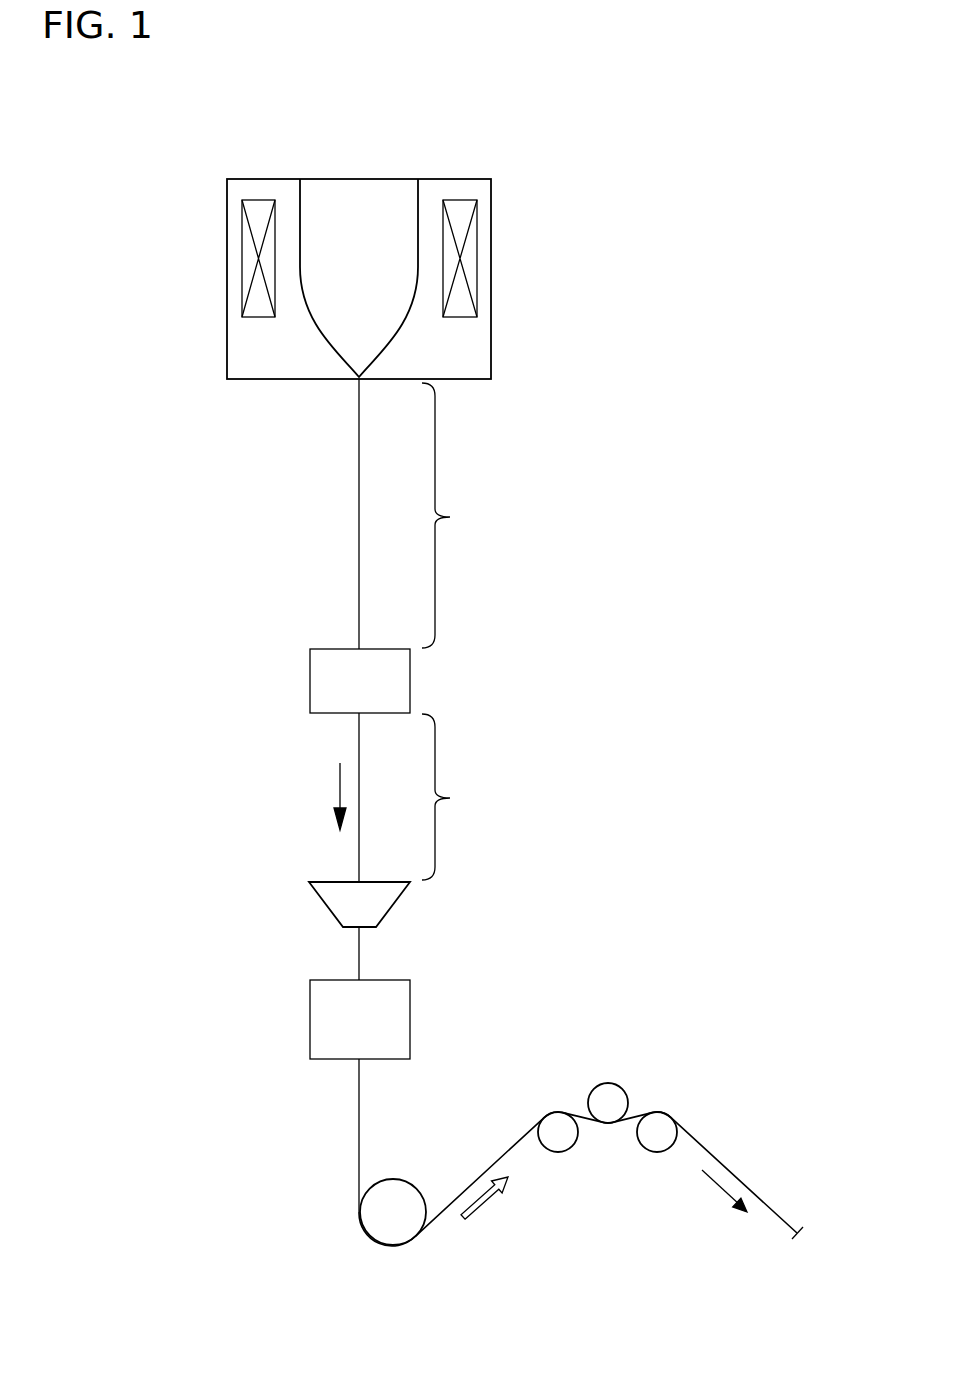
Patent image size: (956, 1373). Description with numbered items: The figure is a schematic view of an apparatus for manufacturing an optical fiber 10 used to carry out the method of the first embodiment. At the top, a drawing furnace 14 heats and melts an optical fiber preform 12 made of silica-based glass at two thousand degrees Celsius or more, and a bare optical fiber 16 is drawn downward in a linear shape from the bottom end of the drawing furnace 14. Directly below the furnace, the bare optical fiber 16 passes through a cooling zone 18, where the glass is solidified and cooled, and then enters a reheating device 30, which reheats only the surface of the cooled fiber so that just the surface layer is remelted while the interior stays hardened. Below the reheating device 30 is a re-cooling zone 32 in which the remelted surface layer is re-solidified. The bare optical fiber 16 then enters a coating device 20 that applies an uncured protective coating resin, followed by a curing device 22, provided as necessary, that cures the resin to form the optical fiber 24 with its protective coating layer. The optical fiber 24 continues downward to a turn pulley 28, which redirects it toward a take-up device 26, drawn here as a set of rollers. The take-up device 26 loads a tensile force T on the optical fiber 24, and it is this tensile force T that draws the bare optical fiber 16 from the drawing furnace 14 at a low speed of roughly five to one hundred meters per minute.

The apparatus for manufacturing an optical fiber 10 is at (572, 286).
The optical fiber preform 12 is at (357, 200).
The drawing furnace 14 is at (455, 178).
The bare optical fiber 16 is at (359, 486).
The cooling zone 18 is at (452, 515).
The coating device 20 is at (338, 905).
The curing device 22 is at (322, 1020).
The optical fiber 24 is at (359, 1118).
The take-up device 26 is at (605, 1160).
The turn pulley 28 is at (387, 1225).
The reheating device 30 is at (320, 680).
The re-cooling zone 32 is at (408, 797).
The tensile force T is at (478, 1205).